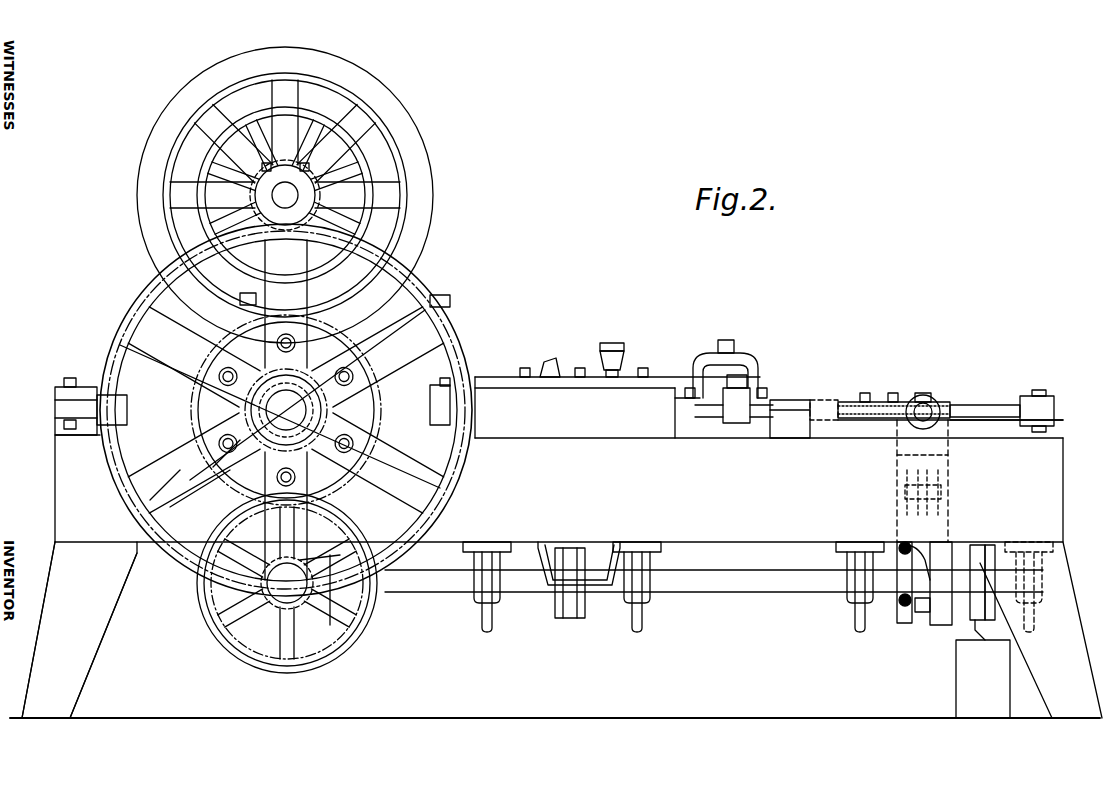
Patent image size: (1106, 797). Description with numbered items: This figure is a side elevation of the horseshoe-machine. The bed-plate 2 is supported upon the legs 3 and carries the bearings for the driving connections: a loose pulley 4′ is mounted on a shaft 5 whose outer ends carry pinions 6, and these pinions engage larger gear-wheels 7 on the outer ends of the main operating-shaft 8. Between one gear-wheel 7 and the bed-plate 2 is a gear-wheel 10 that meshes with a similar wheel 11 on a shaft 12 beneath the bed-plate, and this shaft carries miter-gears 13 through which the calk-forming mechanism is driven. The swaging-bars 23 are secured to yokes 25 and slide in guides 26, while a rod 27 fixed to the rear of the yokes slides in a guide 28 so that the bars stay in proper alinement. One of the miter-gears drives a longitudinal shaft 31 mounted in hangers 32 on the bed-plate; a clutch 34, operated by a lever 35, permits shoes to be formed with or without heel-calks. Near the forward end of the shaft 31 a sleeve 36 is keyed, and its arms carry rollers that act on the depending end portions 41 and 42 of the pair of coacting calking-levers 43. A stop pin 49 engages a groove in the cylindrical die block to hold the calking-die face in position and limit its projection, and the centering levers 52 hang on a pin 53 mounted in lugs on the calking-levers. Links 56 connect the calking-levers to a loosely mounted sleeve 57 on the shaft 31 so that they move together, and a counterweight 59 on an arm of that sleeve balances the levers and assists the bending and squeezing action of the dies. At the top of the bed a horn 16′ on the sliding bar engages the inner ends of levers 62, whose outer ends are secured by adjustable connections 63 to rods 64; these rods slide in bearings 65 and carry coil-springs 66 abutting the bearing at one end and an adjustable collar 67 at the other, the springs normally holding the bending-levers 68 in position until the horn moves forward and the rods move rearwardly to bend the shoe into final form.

The bed-plate 2 is at (62, 475).
The legs 3 is at (544, 630).
The loose pulley 4′ is at (283, 118).
The shaft 5 is at (285, 195).
The pinions 6 is at (292, 164).
The gear-wheels 7 is at (138, 312).
The main operating-shaft 8 is at (286, 410).
The gear-wheel 10 is at (240, 470).
The gear-wheel 11 is at (320, 656).
The shaft 12 is at (272, 600).
The miter-gears 13 is at (312, 600).
The horn 16′ is at (548, 360).
The swaging-bars 23 is at (450, 413).
The yokes 25 is at (400, 300).
The guides 26 is at (494, 376).
The rod 27 is at (118, 400).
The guide 28 is at (64, 380).
The longitudinal shaft 31 is at (714, 582).
The hangers 32 is at (478, 603).
The clutch 34 is at (578, 605).
The lever 35 is at (550, 583).
The sleeve 36 is at (922, 612).
The depending end portion 41 is at (904, 623).
The depending end portion 42 is at (940, 625).
The calking-levers 43 is at (940, 520).
The stop pin 49 is at (923, 395).
The levers 52 is at (925, 465).
The pin 53 is at (903, 493).
The links 56 is at (990, 550).
The sleeve 57 is at (975, 622).
The counterweight 59 is at (983, 679).
The levers 62 is at (745, 395).
The adjustable connections 63 is at (740, 423).
The rods 64 is at (793, 410).
The bearings 65 is at (824, 402).
The coil-springs 66 is at (876, 402).
The adjustable collar 67 is at (948, 406).
The bending-levers 68 is at (1050, 412).